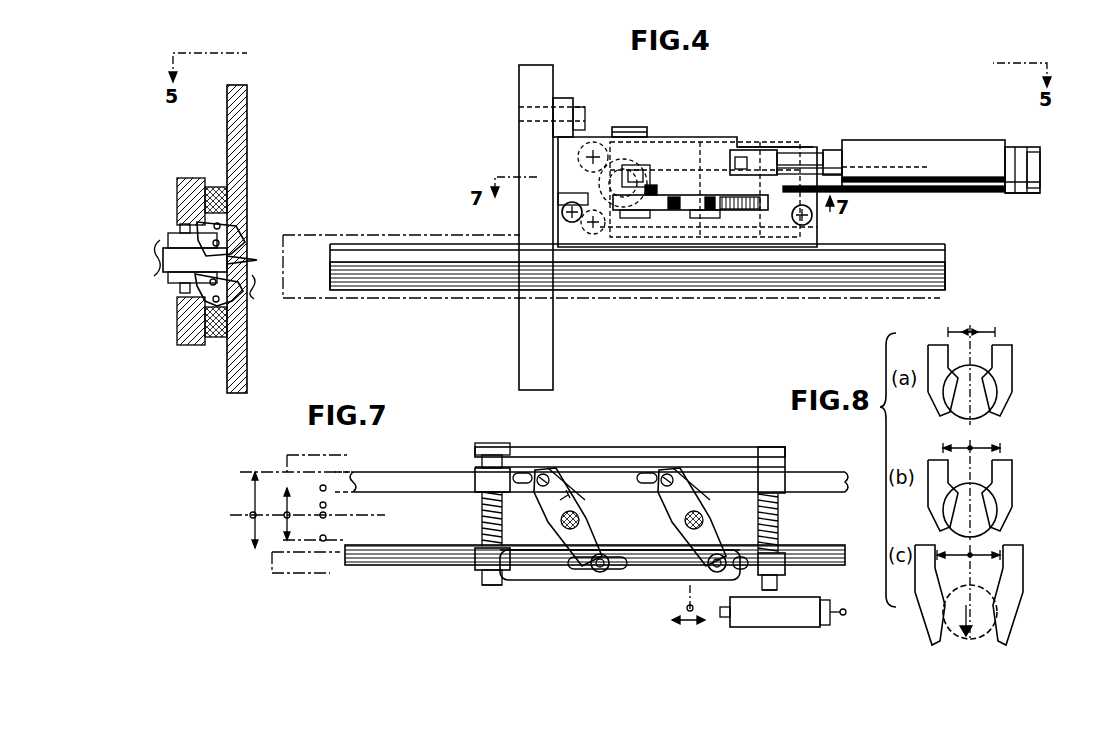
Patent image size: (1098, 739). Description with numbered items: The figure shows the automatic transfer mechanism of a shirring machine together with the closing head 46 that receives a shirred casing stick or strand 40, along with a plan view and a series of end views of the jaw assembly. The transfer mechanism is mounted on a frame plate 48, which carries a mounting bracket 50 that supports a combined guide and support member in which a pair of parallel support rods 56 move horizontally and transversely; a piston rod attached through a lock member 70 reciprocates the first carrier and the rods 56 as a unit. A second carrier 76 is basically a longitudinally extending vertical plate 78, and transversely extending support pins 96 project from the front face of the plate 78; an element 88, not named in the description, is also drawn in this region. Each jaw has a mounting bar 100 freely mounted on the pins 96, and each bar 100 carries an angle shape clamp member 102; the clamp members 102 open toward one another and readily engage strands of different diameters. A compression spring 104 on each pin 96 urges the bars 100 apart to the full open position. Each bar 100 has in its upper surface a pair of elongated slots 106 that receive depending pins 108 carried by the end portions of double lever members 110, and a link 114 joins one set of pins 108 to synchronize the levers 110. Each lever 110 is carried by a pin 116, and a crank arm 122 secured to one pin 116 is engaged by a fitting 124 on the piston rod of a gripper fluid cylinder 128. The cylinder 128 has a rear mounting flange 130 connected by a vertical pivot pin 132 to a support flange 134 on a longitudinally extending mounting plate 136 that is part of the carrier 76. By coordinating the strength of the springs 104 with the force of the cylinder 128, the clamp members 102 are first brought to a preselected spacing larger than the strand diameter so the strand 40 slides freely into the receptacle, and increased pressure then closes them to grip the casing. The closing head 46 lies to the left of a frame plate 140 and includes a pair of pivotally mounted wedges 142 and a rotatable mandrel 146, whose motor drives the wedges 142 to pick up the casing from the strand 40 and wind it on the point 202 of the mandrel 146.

In FIG. 4, the shirred casing stick or strand 40 is at (345, 232).
In FIG. 8, the shirred casing stick or strand 40 is at (990, 420).
In FIG. 4, the closing head 46 is at (253, 195).
In FIG. 4, the frame plate 48 is at (519, 82).
In FIG. 4, the mounting bracket 50 is at (565, 100).
In FIG. 4, the support rods 56 is at (593, 145).
In FIG. 4, the lock member 70 is at (630, 127).
In FIG. 4, the second carrier 76 is at (680, 137).
In FIG. 7, the vertical plate 78 is at (690, 455).
In FIG. 4, the piston rod 88 is at (890, 193).
In FIG. 4, the support pins 96 is at (562, 212).
In FIG. 7, the support pins 96 is at (482, 585).
In FIG. 4, the mounting bar 100 is at (735, 262).
In FIG. 7, the mounting bar 100 is at (612, 455).
In FIG. 8, the mounting bar 100 is at (945, 345).
In FIG. 4, the clamp member 102 is at (930, 262).
In FIG. 7, the clamp member 102 is at (405, 476).
In FIG. 8, the clamp member 102 is at (942, 416).
In FIG. 7, the compression spring 104 is at (482, 515).
In FIG. 7, the elongated slots 106 is at (522, 472).
In FIG. 7, the depending pins 108 is at (546, 474).
In FIG. 7, the double lever members 110 is at (550, 505).
In FIG. 7, the link 114 is at (634, 574).
In FIG. 7, the pin 116 is at (583, 496).
In FIG. 4, the crank arm 122 is at (745, 150).
In FIG. 4, the fitting 124 is at (755, 147).
In FIG. 4, the gripper fluid cylinder 128 is at (950, 140).
In FIG. 7, the gripper fluid cylinder 128 is at (774, 600).
In FIG. 4, the rear mounting flange 130 is at (1043, 178).
In FIG. 4, the vertical pivot pin 132 is at (1022, 200).
In FIG. 4, the support flange 134 is at (1015, 147).
In FIG. 4, the mounting plate 136 is at (1002, 193).
In FIG. 4, the frame plate 140 is at (250, 128).
In FIG. 4, the wedges 142 is at (233, 226).
In FIG. 4, the rotatable mandrel 146 is at (165, 276).
In FIG. 4, the point 202 is at (248, 278).